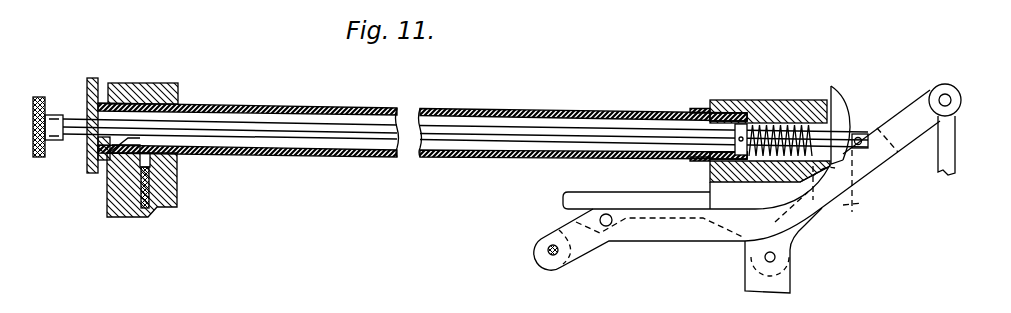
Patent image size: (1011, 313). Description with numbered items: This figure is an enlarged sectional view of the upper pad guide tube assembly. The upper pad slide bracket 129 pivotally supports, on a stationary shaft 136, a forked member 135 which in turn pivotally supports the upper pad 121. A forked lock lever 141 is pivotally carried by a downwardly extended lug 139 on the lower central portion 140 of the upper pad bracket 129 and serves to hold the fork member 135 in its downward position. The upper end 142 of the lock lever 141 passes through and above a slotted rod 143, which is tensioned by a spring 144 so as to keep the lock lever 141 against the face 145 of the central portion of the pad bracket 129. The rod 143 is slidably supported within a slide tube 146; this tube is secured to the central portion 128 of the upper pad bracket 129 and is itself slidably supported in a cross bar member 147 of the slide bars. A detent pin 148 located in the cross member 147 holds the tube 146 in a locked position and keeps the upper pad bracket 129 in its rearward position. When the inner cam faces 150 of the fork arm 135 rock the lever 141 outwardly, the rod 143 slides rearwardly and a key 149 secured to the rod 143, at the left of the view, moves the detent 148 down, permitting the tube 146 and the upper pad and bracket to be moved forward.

The upper pad 121 is at (954, 150).
The central portion of the upper pad bracket 128 is at (737, 100).
The upper pad slide bracket 129 is at (630, 192).
The forked member 135 is at (875, 167).
The stationary shaft 136 is at (608, 228).
The downwardly extended lug 139 is at (745, 250).
The lower central portion of the upper pad bracket 140 is at (770, 187).
The forked lock lever 141 is at (843, 224).
The upper end of the lock lever 142 is at (840, 110).
The slotted rod 143 is at (586, 128).
The spring 144 is at (778, 125).
The face of the central portion of the pad bracket 145 is at (828, 102).
The slide tube 146 is at (538, 112).
The cross bar member 147 is at (112, 203).
The detent pin 148 is at (150, 167).
The key 149 is at (110, 168).
The inner cam faces 150 is at (790, 228).